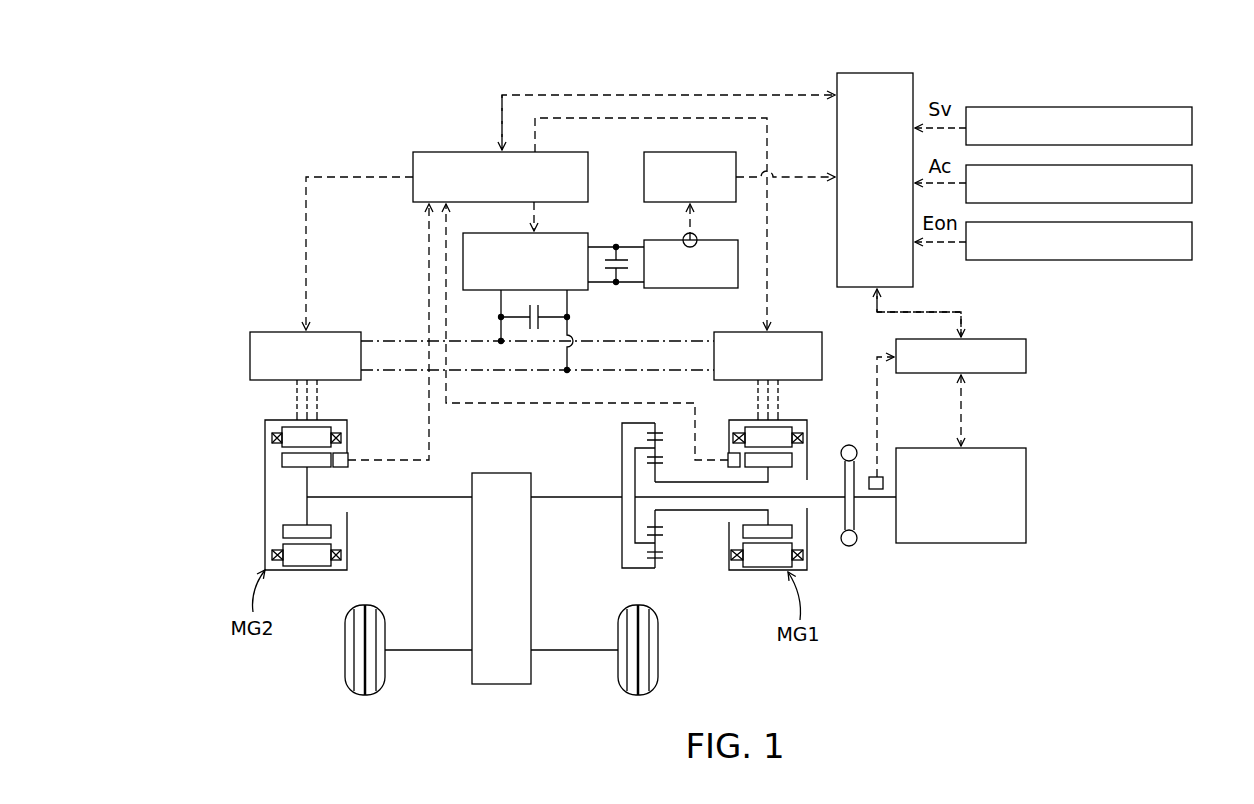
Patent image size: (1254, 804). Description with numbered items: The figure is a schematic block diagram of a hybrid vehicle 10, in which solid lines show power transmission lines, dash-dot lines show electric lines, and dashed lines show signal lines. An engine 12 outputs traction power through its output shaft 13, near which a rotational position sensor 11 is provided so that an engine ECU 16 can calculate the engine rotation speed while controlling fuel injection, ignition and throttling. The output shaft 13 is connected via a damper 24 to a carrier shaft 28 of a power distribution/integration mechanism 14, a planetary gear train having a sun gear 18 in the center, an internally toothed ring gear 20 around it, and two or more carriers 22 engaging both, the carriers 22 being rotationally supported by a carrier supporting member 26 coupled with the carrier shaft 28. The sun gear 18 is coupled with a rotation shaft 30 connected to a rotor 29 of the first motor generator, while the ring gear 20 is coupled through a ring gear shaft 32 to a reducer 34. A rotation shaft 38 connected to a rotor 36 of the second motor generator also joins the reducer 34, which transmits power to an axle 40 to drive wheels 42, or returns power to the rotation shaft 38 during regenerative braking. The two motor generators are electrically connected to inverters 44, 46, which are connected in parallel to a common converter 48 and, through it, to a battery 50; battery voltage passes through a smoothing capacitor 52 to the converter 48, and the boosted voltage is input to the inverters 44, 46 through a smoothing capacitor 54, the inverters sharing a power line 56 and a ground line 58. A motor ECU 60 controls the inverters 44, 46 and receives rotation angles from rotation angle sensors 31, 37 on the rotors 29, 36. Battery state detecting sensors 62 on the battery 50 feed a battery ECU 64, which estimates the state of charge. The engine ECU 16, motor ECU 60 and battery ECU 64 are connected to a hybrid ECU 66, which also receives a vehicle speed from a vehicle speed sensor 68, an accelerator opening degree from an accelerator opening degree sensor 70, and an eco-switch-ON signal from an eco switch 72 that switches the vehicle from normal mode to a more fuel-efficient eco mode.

The hybrid vehicle 10 is at (345, 128).
The rotational position sensor 11 is at (884, 476).
The engine 12 is at (961, 543).
The output shaft 13 is at (880, 499).
The power distribution/integration mechanism 14 is at (638, 519).
The engine ECU 16 is at (1026, 357).
The sun gear 18 is at (663, 529).
The ring gear 20 is at (663, 557).
The carriers 22 is at (663, 549).
The damper 24 is at (857, 513).
The carrier supporting member 26 is at (632, 467).
The carrier shaft 28 is at (826, 495).
The rotor 29 is at (789, 523).
The rotation shaft 30 is at (716, 512).
The rotation angle sensor 31 is at (728, 456).
The ring gear shaft 32 is at (563, 499).
The reducer 34 is at (500, 473).
The rotor 36 is at (313, 523).
The rotation angle sensor 37 is at (350, 455).
The rotation shaft 38 is at (433, 499).
The axle 40 is at (572, 652).
The wheels 42 is at (345, 665).
The inverter 44 is at (805, 332).
The inverter 46 is at (268, 332).
The converter 48 is at (570, 240).
The battery 50 is at (677, 290).
The smoothing capacitor 52 is at (614, 283).
The smoothing capacitor 54 is at (527, 306).
The power line 56 is at (501, 330).
The ground line 58 is at (567, 360).
The motor ECU 60 is at (447, 152).
The battery state detecting sensors 62 is at (698, 236).
The battery ECU 64 is at (644, 162).
The hybrid ECU 66 is at (877, 73).
The vehicle speed sensor 68 is at (1192, 124).
The accelerator opening degree sensor 70 is at (1192, 182).
The eco switch 72 is at (1192, 239).